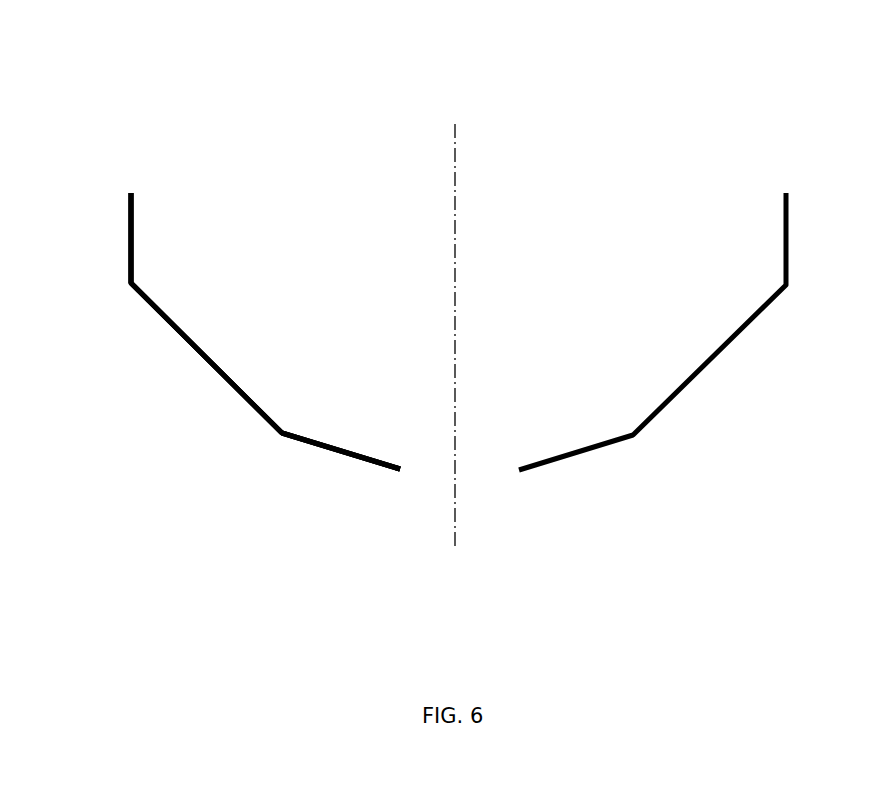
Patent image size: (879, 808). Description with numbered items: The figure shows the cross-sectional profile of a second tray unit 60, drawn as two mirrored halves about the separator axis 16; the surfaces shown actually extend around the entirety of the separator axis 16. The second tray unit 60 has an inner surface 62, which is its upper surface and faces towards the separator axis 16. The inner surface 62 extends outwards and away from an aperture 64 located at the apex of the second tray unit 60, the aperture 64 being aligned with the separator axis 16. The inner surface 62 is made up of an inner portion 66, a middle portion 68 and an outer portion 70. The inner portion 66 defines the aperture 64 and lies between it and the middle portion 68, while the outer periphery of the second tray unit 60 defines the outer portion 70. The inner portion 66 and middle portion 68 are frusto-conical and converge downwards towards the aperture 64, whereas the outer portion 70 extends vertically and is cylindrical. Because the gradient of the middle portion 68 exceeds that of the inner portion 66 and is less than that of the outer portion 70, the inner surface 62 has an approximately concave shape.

The second tray unit 60 is at (675, 105).
The separator axis 16 is at (455, 191).
The inner surface 62 is at (277, 366).
The aperture 64 is at (442, 484).
The inner portion 66 is at (353, 458).
The middle portion 68 is at (227, 382).
The outer portion 70 is at (128, 263).